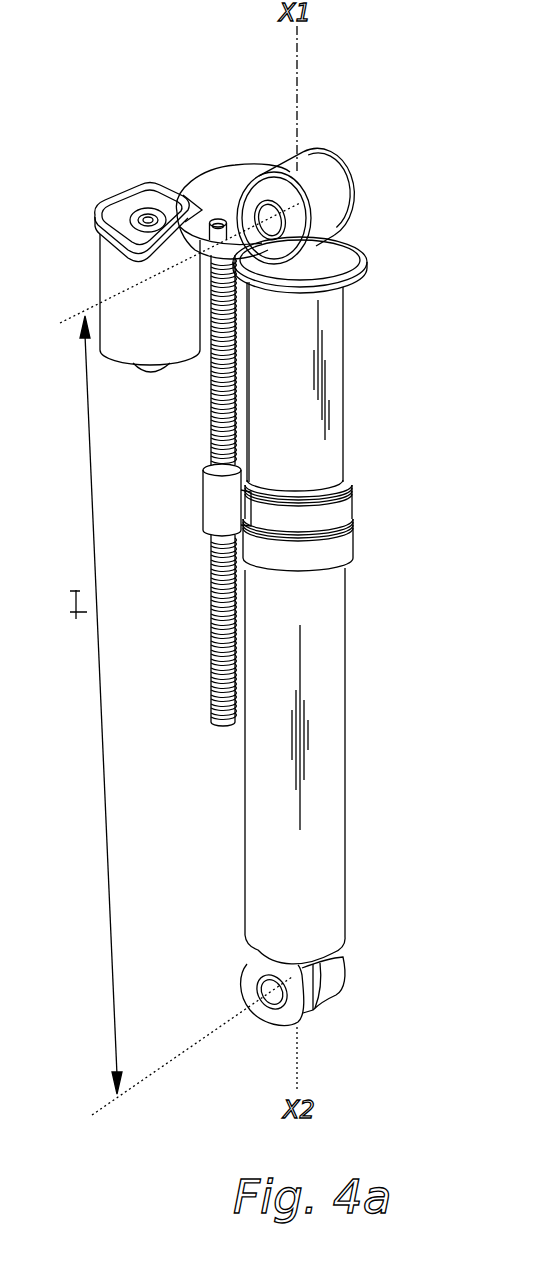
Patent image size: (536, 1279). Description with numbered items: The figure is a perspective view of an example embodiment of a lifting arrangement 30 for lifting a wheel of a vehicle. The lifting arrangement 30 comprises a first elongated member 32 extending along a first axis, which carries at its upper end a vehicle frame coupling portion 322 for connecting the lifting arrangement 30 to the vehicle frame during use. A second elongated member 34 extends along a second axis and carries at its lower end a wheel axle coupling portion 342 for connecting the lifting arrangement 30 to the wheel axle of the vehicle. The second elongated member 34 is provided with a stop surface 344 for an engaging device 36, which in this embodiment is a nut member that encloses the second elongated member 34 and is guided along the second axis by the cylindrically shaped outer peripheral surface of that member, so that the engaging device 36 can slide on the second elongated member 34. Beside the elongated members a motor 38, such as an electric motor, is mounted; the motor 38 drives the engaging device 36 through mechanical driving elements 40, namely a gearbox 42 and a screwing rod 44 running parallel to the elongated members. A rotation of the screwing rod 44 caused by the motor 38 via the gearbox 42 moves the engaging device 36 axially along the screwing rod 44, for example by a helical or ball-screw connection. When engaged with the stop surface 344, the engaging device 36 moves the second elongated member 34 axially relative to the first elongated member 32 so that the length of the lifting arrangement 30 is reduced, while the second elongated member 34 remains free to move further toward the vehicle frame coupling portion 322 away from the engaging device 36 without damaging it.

The lifting arrangement 30 is at (443, 205).
The first elongated member 32 is at (333, 355).
The vehicle frame coupling portion 322 is at (327, 183).
The second elongated member 34 is at (343, 812).
The wheel axle coupling portion 342 is at (325, 980).
The stop surface 344 is at (333, 497).
The engaging device 36 is at (330, 565).
The motor 38 is at (153, 375).
The mechanical driving elements 40 is at (181, 627).
The gearbox 42 is at (229, 162).
The screwing rod 44 is at (213, 685).